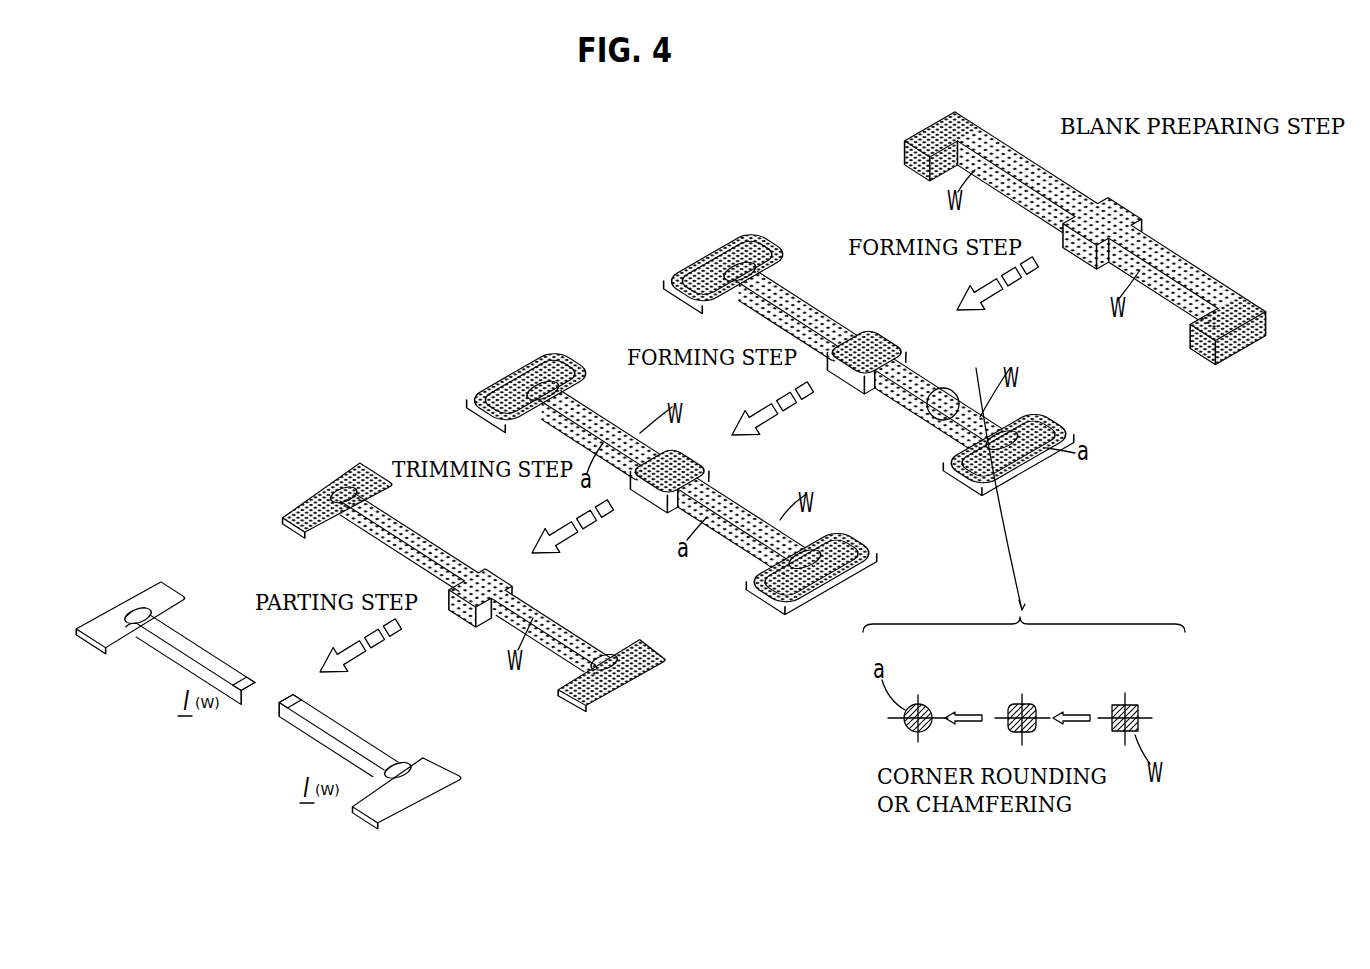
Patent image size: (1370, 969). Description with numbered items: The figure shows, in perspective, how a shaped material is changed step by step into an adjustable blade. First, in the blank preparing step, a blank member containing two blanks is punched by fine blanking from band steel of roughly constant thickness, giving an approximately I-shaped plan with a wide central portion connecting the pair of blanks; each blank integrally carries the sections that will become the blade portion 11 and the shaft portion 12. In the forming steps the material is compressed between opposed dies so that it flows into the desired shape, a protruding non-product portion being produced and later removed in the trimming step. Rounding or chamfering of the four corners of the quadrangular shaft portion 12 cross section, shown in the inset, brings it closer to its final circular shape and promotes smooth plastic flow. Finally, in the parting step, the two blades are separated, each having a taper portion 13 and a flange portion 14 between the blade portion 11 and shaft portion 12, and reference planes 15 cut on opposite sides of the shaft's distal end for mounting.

The blade portion 11 is at (938, 140).
The shaft portion 12 is at (993, 148).
The taper portion 13 is at (142, 627).
The flange portion 14 is at (152, 603).
The reference planes 15 is at (247, 668).